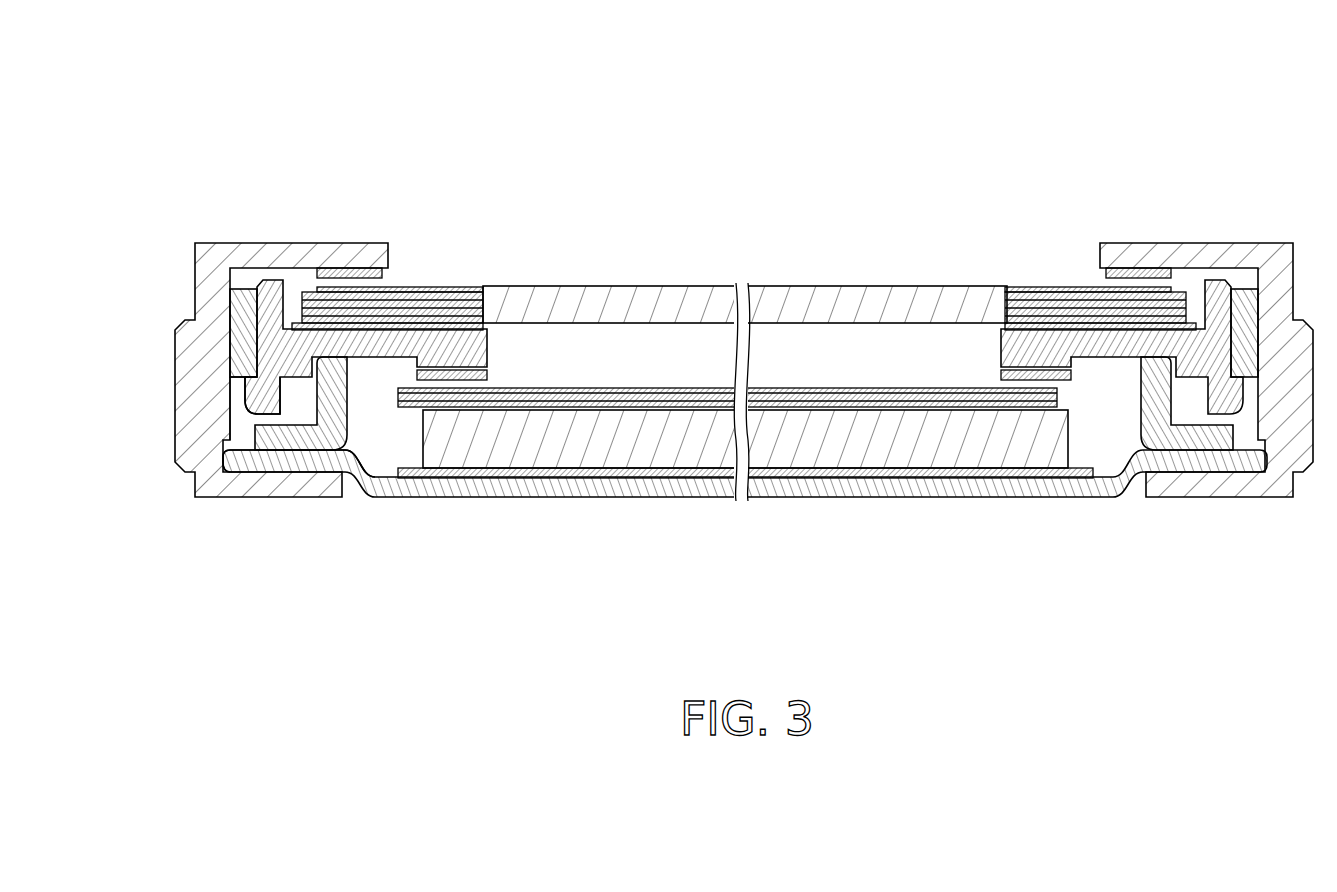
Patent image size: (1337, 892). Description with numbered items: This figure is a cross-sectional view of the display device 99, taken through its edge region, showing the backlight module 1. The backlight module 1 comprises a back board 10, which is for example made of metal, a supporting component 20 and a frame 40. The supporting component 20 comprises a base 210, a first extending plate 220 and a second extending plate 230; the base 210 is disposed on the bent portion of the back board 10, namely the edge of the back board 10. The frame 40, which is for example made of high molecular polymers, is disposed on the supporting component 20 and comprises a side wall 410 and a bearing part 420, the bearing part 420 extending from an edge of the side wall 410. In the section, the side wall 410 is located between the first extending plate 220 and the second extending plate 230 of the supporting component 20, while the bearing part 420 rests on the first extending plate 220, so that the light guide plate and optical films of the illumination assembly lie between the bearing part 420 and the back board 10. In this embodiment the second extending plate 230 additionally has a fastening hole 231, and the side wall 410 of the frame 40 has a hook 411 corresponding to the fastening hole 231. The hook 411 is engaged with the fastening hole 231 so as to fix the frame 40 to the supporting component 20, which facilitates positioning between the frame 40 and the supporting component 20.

The display device 99 is at (203, 67).
The backlight module 1 is at (455, 523).
The back board 10 is at (548, 493).
The supporting component 20 is at (112, 562).
The base 210 is at (272, 438).
The first extending plate 220 is at (328, 470).
The second extending plate 230 is at (243, 348).
The fastening hole 231 is at (232, 425).
The frame 40 is at (457, 186).
The side wall 410 is at (278, 297).
The hook 411 is at (250, 386).
The bearing part 420 is at (438, 290).